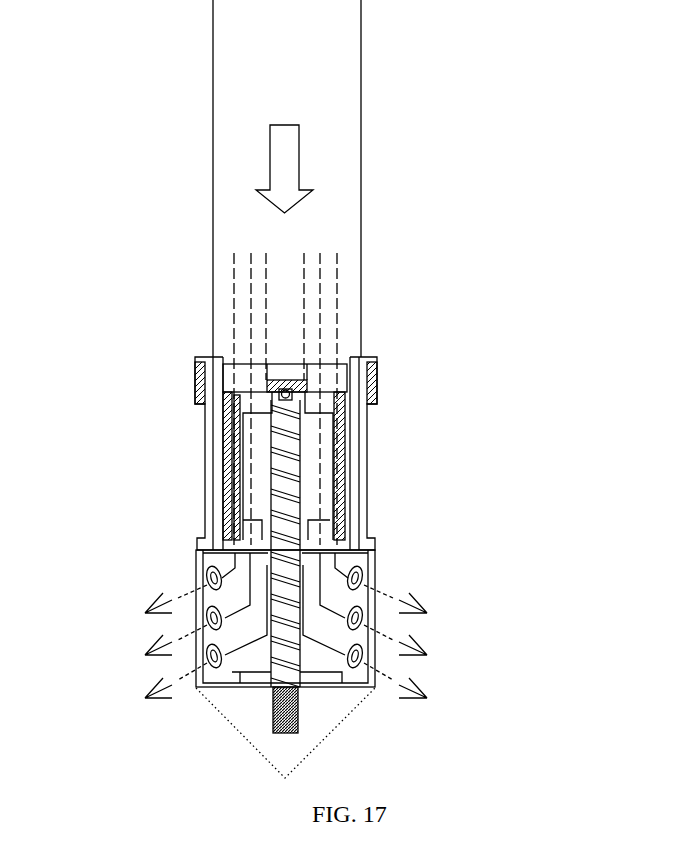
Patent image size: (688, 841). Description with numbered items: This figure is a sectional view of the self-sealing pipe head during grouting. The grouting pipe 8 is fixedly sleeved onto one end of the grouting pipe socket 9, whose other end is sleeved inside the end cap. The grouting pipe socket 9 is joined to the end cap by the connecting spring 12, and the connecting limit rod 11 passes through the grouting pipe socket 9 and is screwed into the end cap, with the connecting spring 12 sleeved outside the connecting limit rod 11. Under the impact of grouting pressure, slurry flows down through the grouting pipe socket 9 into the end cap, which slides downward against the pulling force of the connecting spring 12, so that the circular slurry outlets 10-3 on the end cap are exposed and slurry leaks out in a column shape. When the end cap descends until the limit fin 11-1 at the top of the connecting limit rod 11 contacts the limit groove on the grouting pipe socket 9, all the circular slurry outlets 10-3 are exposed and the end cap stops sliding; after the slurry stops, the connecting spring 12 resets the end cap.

The grouting pipe 8 is at (361, 133).
The grouting pipe socket 9 is at (360, 422).
The connecting limit rod 11 is at (287, 492).
The limit fin 11-1 is at (303, 378).
The connecting spring 12 is at (273, 522).
The circular slurry outlets 10-3 is at (355, 573).